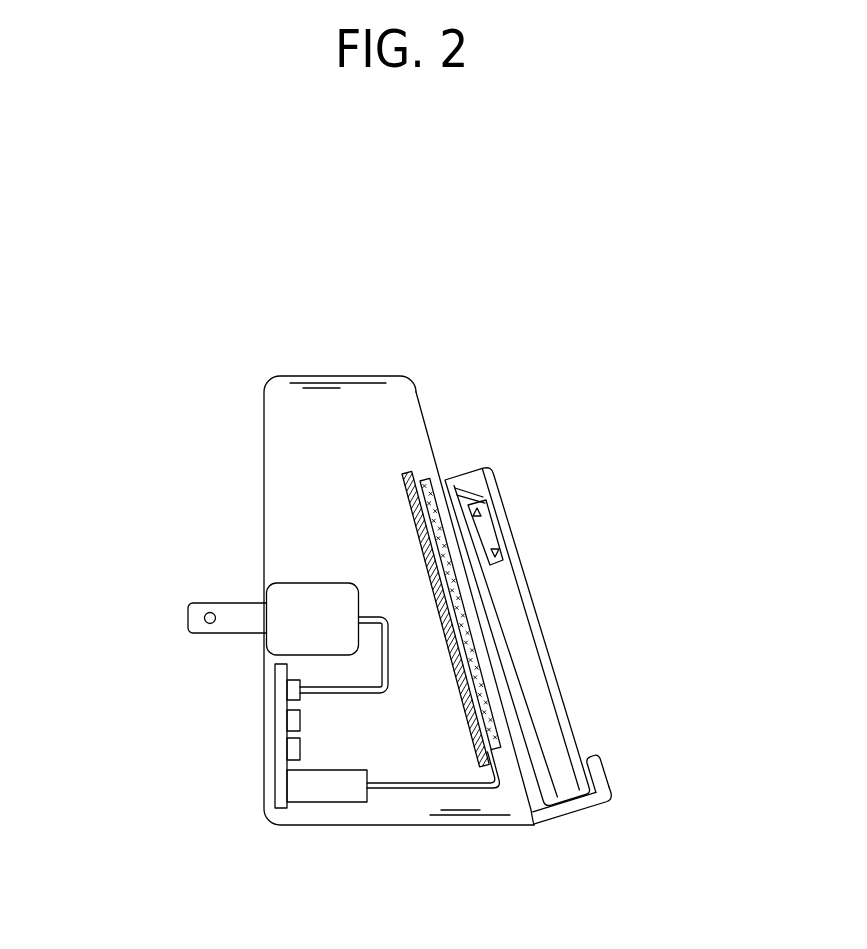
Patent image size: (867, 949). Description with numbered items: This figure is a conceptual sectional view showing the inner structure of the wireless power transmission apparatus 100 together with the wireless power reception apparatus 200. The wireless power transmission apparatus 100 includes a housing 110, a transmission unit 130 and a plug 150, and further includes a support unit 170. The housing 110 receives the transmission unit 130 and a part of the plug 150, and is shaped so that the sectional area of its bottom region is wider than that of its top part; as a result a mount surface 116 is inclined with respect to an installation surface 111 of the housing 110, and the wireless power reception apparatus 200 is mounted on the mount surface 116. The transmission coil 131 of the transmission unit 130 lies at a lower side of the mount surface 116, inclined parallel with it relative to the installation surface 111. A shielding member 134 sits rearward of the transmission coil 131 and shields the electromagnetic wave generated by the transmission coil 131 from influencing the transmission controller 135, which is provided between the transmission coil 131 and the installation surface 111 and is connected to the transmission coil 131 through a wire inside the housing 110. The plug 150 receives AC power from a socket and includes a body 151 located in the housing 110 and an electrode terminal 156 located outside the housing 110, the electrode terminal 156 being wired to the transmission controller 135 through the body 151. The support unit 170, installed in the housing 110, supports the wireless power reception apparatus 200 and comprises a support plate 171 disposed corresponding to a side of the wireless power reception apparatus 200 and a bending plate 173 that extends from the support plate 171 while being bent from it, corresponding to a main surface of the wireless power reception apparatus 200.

The wireless power transmission apparatus 100 is at (208, 323).
The housing 110 is at (376, 363).
The installation surface 111 is at (262, 463).
The mount surface 116 is at (533, 782).
The transmission unit 130 is at (408, 793).
The transmission coil 131 is at (455, 627).
The shielding member 134 is at (450, 587).
The transmission controller 135 is at (280, 744).
The plug 150 is at (250, 589).
The body 151 is at (280, 642).
The electrode terminal 156 is at (197, 618).
The support unit 170 is at (620, 808).
The support plate 171 is at (572, 812).
The bending plate 173 is at (608, 770).
The wireless power reception apparatus 200 is at (581, 695).